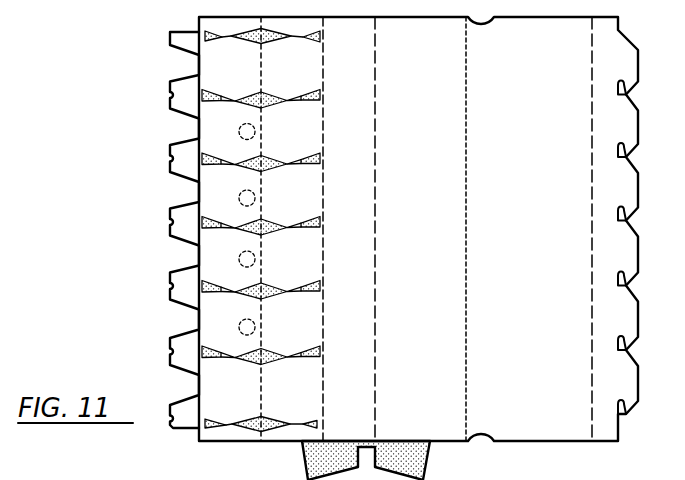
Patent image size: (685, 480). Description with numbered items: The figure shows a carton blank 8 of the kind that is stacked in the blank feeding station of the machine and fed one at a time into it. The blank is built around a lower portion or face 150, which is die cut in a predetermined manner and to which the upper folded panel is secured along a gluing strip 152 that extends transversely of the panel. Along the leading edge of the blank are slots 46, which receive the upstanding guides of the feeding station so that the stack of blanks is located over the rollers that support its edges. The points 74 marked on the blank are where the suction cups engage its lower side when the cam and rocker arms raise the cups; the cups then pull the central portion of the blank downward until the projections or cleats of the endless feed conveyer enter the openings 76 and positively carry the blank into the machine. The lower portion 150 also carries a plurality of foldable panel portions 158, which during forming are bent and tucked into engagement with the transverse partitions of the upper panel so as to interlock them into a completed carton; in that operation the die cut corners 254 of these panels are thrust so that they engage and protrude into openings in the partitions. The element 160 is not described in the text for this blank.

The carton blank 8 is at (633, 36).
The slots 46 is at (185, 128).
The points 74 is at (240, 200).
The openings 76 is at (257, 100).
The lower portion 150 is at (432, 190).
The gluing strip 152 is at (312, 460).
The foldable panel portions 158 is at (267, 61).
The wedge-shaped slot end 160 is at (303, 96).
The die cut corners 254 is at (296, 163).